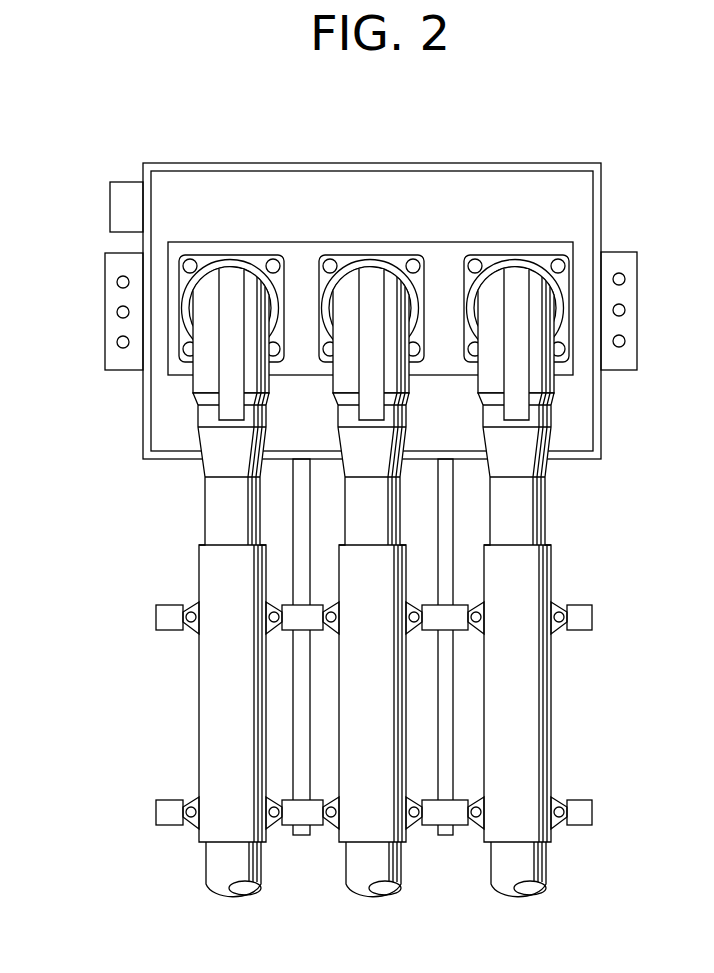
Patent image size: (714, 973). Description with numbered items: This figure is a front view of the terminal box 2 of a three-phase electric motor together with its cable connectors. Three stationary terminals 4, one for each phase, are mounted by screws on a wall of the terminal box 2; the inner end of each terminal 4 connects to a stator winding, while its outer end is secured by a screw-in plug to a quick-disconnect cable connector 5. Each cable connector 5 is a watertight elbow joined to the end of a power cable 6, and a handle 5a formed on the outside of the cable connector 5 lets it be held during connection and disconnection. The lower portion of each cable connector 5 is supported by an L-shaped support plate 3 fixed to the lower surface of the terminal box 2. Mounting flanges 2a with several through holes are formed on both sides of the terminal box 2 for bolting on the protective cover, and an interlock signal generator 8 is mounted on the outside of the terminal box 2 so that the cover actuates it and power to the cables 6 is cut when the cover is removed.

The terminal box 2 is at (419, 160).
The mounting flange 2a is at (106, 342).
The L-shaped support plate 3 is at (291, 533).
The stationary terminal 4 is at (557, 258).
The cable connector 5 is at (212, 288).
The handle 5a is at (360, 352).
The power cable 6 is at (218, 873).
The interlock signal generator 8 is at (110, 202).